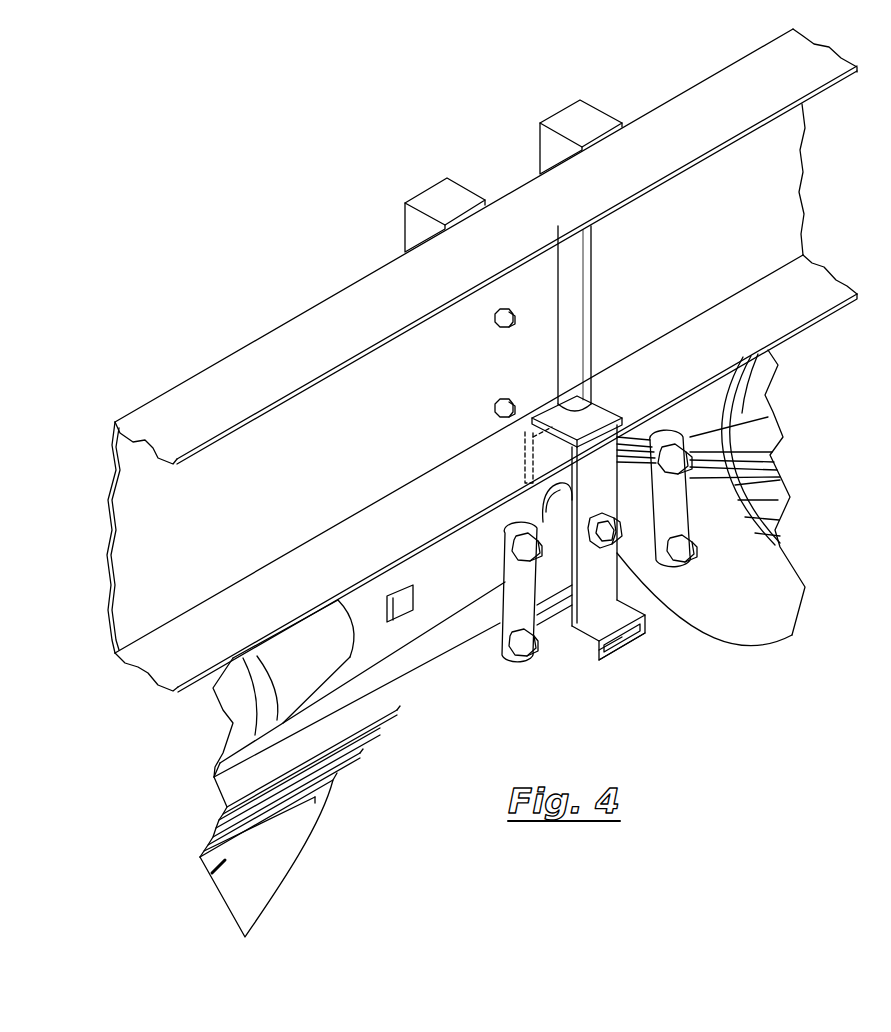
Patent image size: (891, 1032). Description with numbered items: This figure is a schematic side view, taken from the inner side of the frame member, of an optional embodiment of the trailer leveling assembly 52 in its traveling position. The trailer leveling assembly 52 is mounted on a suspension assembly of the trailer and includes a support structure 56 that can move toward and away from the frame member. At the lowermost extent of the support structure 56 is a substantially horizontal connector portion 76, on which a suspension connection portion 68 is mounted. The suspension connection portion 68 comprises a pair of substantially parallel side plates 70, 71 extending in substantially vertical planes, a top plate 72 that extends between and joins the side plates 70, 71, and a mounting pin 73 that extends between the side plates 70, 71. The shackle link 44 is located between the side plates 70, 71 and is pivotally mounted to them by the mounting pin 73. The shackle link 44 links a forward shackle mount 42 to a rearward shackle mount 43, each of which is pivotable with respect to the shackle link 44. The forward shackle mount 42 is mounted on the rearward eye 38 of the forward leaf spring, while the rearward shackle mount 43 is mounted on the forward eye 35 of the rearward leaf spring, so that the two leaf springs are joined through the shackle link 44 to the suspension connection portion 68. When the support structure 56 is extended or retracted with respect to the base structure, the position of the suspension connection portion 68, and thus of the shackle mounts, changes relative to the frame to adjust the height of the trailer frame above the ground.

The forward eye 35 is at (642, 437).
The rearward eye 38 is at (495, 523).
The forward shackle mount 42 is at (498, 624).
The rearward shackle mount 43 is at (672, 490).
The shackle link 44 is at (548, 578).
The trailer leveling assembly 52 is at (664, 636).
The support structure 56 is at (612, 653).
The suspension connection portion 68 is at (592, 597).
The side plate 70 is at (538, 493).
The side plate 71 is at (600, 567).
The top plate 72 is at (552, 440).
The mounting pin 73 is at (612, 545).
The connector portion 76 is at (585, 643).